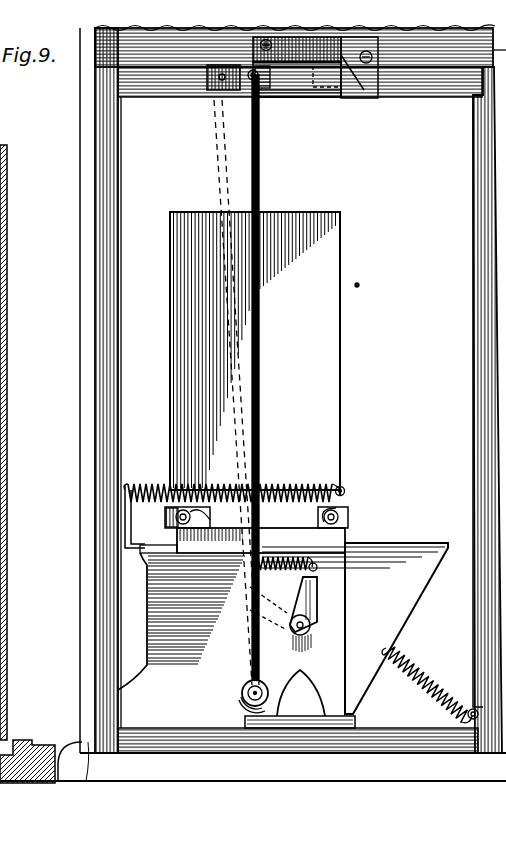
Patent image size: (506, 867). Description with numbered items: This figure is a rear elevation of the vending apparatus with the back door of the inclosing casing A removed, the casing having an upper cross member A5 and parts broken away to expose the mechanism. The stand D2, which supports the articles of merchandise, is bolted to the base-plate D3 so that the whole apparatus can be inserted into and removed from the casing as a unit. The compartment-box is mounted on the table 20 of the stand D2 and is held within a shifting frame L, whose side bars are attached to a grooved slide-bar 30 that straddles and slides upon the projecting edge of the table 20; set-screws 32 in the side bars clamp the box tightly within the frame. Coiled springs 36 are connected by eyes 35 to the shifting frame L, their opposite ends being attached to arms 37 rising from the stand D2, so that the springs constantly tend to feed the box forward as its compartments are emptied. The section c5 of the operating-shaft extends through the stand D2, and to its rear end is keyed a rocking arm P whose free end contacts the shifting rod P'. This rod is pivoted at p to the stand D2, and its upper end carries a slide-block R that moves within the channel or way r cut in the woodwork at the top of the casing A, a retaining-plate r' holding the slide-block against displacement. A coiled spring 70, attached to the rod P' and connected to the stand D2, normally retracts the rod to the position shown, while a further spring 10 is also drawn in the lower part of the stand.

The inclosing casing A is at (8, 257).
The lintel cross piece of frame A5 is at (437, 86).
The channel or way r is at (211, 98).
The slide-block R is at (305, 92).
The retaining-plate r' is at (359, 84).
The shifting rod P' is at (264, 380).
The coiled springs 36 is at (232, 484).
The eyes 35 is at (345, 491).
The arms 37 is at (8, 503).
The set-screws 32 is at (200, 512).
The shifting frame L is at (212, 546).
The grooved slide-bar 30 is at (302, 540).
The table 20 is at (402, 543).
The stand D2 is at (181, 621).
The coiled spring 70 is at (283, 593).
The rocking arm P is at (317, 604).
The section of operating-shaft c5 is at (312, 626).
The pivot p is at (243, 698).
The base-plate D3 is at (357, 718).
The spring 10 is at (424, 664).